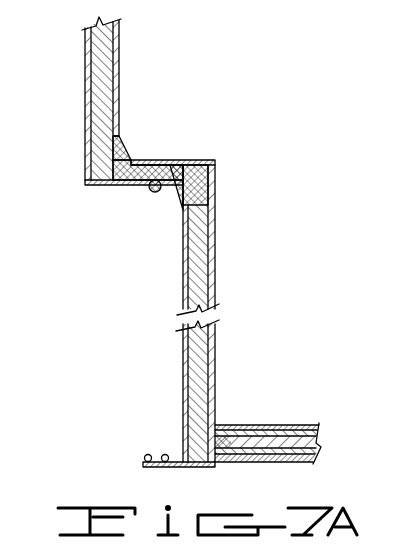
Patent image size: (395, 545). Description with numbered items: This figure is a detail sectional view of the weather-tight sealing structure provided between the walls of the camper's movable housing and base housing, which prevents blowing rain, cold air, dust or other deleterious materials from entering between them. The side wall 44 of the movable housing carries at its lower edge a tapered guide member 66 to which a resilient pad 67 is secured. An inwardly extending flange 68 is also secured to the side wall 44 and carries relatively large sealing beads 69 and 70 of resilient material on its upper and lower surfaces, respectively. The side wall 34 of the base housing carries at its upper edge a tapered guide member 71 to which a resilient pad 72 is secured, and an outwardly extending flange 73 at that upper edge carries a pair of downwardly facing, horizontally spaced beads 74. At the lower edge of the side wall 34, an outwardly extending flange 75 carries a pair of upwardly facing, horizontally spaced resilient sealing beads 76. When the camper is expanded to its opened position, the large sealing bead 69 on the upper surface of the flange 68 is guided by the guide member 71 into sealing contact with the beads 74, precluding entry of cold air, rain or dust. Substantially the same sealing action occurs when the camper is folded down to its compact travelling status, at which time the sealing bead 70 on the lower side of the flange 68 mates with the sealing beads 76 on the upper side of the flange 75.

The side wall 44 is at (113, 68).
The tapered guide member 66 is at (128, 160).
The resilient pad 67 is at (134, 163).
The inwardly extending flange 68 is at (102, 187).
The sealing bead 69 is at (147, 184).
The sealing bead 70 is at (155, 192).
The tapered guide member 71 is at (181, 198).
The resilient pad 72 is at (172, 206).
The outwardly extending flange 73 is at (212, 160).
The beads 74 is at (162, 161).
The side wall 34 is at (193, 272).
The outwardly extending flange 75 is at (162, 467).
The resilient sealing beads 76 is at (172, 423).